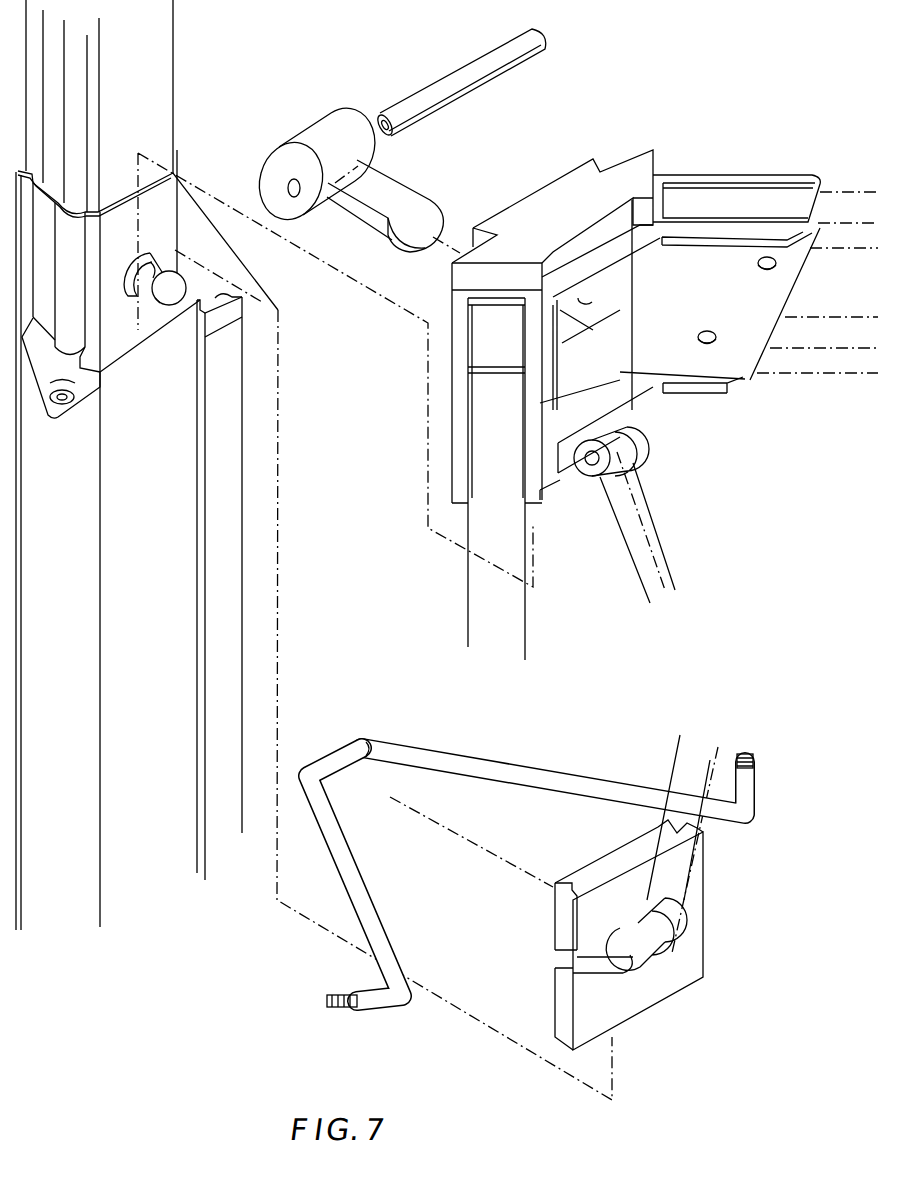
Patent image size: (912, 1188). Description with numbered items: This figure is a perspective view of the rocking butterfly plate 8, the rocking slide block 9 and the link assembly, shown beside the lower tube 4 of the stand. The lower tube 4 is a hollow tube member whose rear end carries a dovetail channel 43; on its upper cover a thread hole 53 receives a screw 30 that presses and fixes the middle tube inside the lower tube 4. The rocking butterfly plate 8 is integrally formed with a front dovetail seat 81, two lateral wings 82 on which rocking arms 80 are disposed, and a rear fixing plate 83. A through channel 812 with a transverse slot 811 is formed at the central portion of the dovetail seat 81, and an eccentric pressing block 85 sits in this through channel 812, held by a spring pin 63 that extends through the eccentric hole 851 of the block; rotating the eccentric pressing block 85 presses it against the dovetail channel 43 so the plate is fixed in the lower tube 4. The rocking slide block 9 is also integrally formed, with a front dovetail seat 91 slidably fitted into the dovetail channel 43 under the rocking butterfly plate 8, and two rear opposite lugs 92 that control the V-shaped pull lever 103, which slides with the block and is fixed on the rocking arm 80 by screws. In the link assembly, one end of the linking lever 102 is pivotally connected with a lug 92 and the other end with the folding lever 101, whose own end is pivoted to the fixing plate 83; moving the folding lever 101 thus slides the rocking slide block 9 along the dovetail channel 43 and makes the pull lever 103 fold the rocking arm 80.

The lower tube 4 is at (233, 622).
The dovetail channel 43 is at (190, 479).
The screw 30 is at (175, 300).
The thread hole 53 is at (162, 268).
The eccentric pressing block 85 is at (331, 113).
The eccentric hole 851 is at (298, 194).
The spring pin 63 is at (457, 75).
The rocking butterfly plate 8 is at (636, 355).
The front dovetail seat 81 is at (552, 180).
The transverse slot 811 is at (720, 305).
The through channel 812 is at (603, 372).
The lateral wing 82 is at (745, 175).
The rear fixing plate 83 is at (592, 478).
The rocking arm 80 is at (823, 365).
The folding lever 101 is at (665, 545).
The V-shaped pull lever 103 is at (590, 758).
The linking lever 102 is at (693, 853).
The rocking slide block 9 is at (665, 927).
The front dovetail seat 91 is at (607, 863).
The rear lug 92 is at (657, 977).